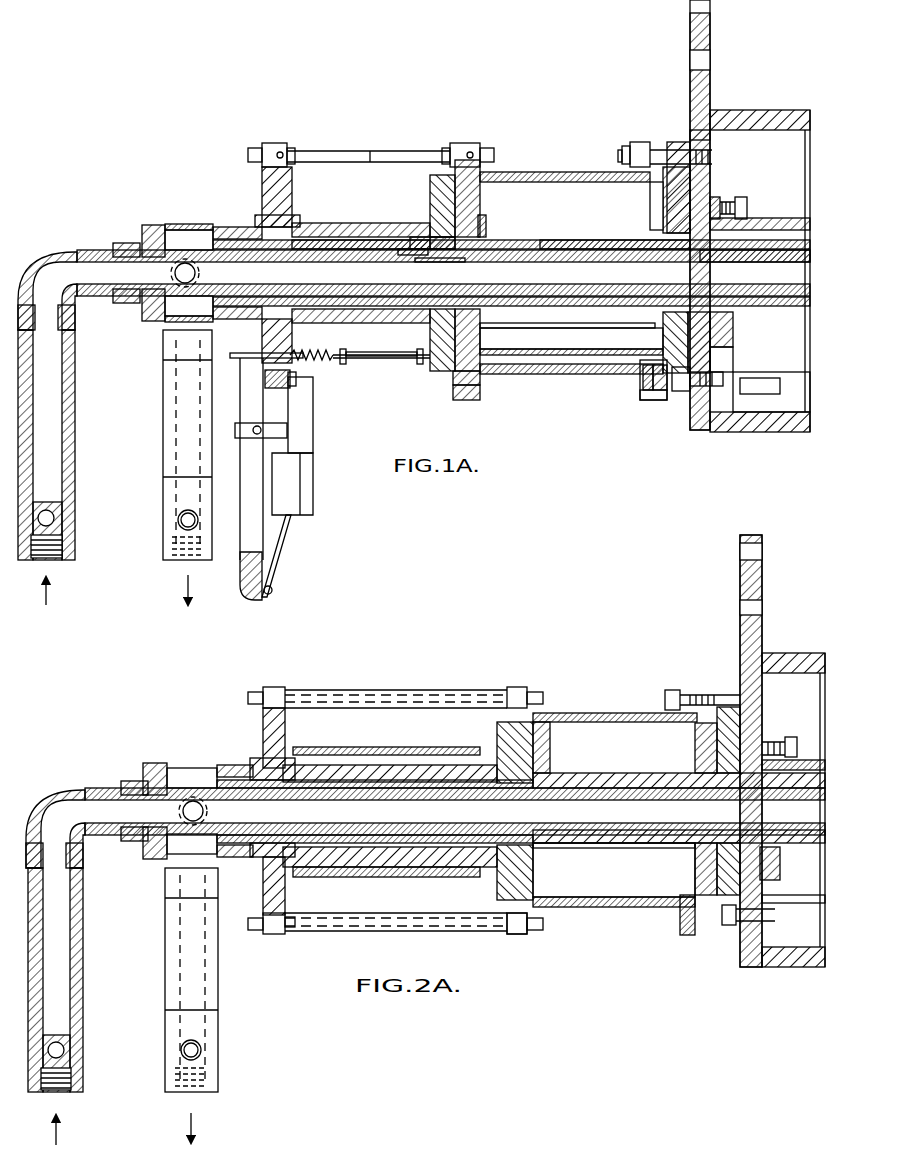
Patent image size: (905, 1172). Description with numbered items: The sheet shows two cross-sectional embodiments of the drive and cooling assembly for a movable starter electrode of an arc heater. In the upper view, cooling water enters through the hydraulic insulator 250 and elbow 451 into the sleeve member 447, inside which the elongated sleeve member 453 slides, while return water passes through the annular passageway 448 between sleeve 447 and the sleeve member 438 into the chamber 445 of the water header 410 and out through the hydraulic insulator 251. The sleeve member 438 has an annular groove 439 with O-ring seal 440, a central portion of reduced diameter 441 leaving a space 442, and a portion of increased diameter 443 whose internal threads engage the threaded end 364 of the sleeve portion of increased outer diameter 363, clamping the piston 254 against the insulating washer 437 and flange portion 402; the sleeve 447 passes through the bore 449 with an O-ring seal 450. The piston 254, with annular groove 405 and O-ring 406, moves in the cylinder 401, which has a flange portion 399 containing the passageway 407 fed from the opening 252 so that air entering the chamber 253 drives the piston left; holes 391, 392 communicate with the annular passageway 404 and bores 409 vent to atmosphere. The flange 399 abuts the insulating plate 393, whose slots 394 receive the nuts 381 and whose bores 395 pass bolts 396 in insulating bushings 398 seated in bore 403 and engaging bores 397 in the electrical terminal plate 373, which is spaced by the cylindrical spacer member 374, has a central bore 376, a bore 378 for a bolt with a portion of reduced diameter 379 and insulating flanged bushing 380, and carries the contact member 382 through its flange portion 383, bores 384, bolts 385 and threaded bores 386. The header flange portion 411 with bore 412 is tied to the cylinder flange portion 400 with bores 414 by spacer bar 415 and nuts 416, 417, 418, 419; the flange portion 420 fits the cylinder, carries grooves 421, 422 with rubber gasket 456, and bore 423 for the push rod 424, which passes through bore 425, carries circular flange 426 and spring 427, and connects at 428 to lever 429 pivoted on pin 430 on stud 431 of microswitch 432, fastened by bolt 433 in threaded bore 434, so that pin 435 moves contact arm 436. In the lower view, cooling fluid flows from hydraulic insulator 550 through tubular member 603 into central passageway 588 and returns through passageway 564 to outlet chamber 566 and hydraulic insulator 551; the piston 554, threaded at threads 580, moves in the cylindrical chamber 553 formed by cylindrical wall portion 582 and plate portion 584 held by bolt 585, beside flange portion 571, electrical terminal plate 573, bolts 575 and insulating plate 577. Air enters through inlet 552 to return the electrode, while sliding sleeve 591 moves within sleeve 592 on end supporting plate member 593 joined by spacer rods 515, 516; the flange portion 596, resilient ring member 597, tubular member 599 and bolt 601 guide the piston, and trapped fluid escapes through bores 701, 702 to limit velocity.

In FIG. 1A, the hydraulic insulator 250 is at (125, 410).
In FIG. 1A, the hydraulic insulator 251 is at (170, 466).
In FIG. 1A, the opening 252 is at (655, 398).
In FIG. 1A, the chamber 253 is at (631, 335).
In FIG. 1A, the piston 254 is at (482, 335).
In FIG. 1A, the portion of increased outer diameter 363 is at (620, 252).
In FIG. 1A, the threaded end 364 is at (420, 262).
In FIG. 1A, the electrical terminal plate 373 is at (712, 22).
In FIG. 1A, the cylindrical spacer member 374 is at (770, 112).
In FIG. 1A, the central bore 376 is at (745, 255).
In FIG. 1A, the bore 378 is at (720, 360).
In FIG. 1A, the portion of reduced diameter 379 is at (790, 378).
In FIG. 1A, the insulating flanged bushing 380 is at (724, 380).
In FIG. 1A, the nut 381 is at (684, 392).
In FIG. 1A, the contact member 382 is at (735, 340).
In FIG. 1A, the flange portion 383 is at (718, 205).
In FIG. 1A, the bores 384 is at (748, 195).
In FIG. 1A, the bolts 385 is at (748, 208).
In FIG. 1A, the threaded bores 386 is at (722, 196).
In FIG. 1A, the hole 391 is at (663, 218).
In FIG. 1A, the hole 392 is at (680, 320).
In FIG. 1A, the insulating plate 393 is at (675, 145).
In FIG. 1A, the slots 394 is at (668, 394).
In FIG. 1A, the bores 395 is at (648, 150).
In FIG. 1A, the bolts 396 is at (618, 158).
In FIG. 1A, the bores 397 is at (714, 155).
In FIG. 1A, the insulating flanged bushing 398 is at (626, 148).
In FIG. 1A, the flange portion 399 is at (643, 385).
In FIG. 1A, the flange portion 400 is at (462, 150).
In FIG. 1A, the cylinder 401 is at (541, 163).
In FIG. 1A, the flange portion 402 is at (545, 235).
In FIG. 1A, the bore 403 is at (650, 190).
In FIG. 1A, the annular passageway 404 is at (695, 318).
In FIG. 1A, the annular groove 405 is at (480, 370).
In FIG. 1A, the O-ring 406 is at (486, 388).
In FIG. 1A, the passageway 407 is at (650, 364).
In FIG. 1A, the bores 409 is at (702, 130).
In FIG. 1A, the water header 410 is at (266, 185).
In FIG. 1A, the flange portion 411 is at (275, 150).
In FIG. 1A, the bore 412 is at (281, 150).
In FIG. 1A, the bores 414 is at (472, 150).
In FIG. 1A, the spacer bar 415 is at (372, 150).
In FIG. 1A, the nut 416 is at (294, 156).
In FIG. 1A, the nut 417 is at (444, 155).
In FIG. 1A, the nut 418 is at (250, 152).
In FIG. 1A, the nut 419 is at (490, 152).
In FIG. 1A, the flange portion 420 is at (435, 200).
In FIG. 1A, the annular groove 421 is at (482, 203).
In FIG. 1A, the annular groove 422 is at (432, 182).
In FIG. 1A, the circular bore 423 is at (424, 368).
In FIG. 1A, the push rod 424 is at (370, 355).
In FIG. 1A, the bore 425 is at (285, 330).
In FIG. 1A, the circular flange 426 is at (322, 362).
In FIG. 1A, the spring 427 is at (323, 378).
In FIG. 1A, the connection 428 is at (234, 353).
In FIG. 1A, the lever 429 is at (225, 380).
In FIG. 1A, the pin 430 is at (235, 428).
In FIG. 1A, the stud 431 is at (245, 434).
In FIG. 1A, the microswitch 432 is at (365, 487).
In FIG. 1A, the bolt 433 is at (315, 395).
In FIG. 1A, the threaded bore 434 is at (300, 418).
In FIG. 1A, the pin 435 is at (278, 590).
In FIG. 1A, the contact arm 436 is at (290, 558).
In FIG. 1A, the insulating washer 437 is at (488, 325).
In FIG. 1A, the sleeve member 438 is at (292, 228).
In FIG. 1A, the annular groove 439 is at (187, 232).
In FIG. 1A, the O-ring seal 440 is at (228, 236).
In FIG. 1A, the central portion of reduced diameter 441 is at (402, 256).
In FIG. 1A, the space 442 is at (342, 238).
In FIG. 1A, the portion of increased diameter 443 is at (432, 236).
In FIG. 1A, the chamber 445 is at (152, 226).
In FIG. 1A, the sleeve member 447 is at (322, 254).
In FIG. 1A, the annular passageway 448 is at (378, 340).
In FIG. 1A, the bore 449 is at (125, 244).
In FIG. 1A, the O-ring seal 450 is at (124, 304).
In FIG. 1A, the elbow 451 is at (43, 256).
In FIG. 1A, the elongated sleeve member 453 is at (383, 252).
In FIG. 1A, the rubber gasket 456 is at (488, 224).
In FIG. 2A, the spacer rod 515 is at (400, 688).
In FIG. 2A, the spacer rod 516 is at (435, 932).
In FIG. 2A, the hydraulic insulator 550 is at (75, 978).
In FIG. 2A, the hydraulic insulator 551 is at (218, 996).
In FIG. 2A, the inlet 552 is at (690, 905).
In FIG. 2A, the cylindrical chamber 553 is at (649, 873).
In FIG. 2A, the piston 554 is at (533, 752).
In FIG. 2A, the cylindrical passageway 564 is at (448, 830).
In FIG. 2A, the outlet chamber 566 is at (192, 770).
In FIG. 2A, the flange portion 571 is at (762, 740).
In FIG. 2A, the electrical terminal plate 573 is at (738, 580).
In FIG. 2A, the bolts 575 is at (798, 745).
In FIG. 2A, the insulating plate 577 is at (725, 705).
In FIG. 2A, the threads 580 is at (518, 862).
In FIG. 2A, the cylindrical wall portion 582 is at (590, 713).
In FIG. 2A, the plate portion 584 is at (696, 750).
In FIG. 2A, the bolt 585 is at (668, 695).
In FIG. 2A, the central passageway 588 is at (637, 819).
In FIG. 2A, the sliding sleeve 591 is at (332, 868).
In FIG. 2A, the sleeve 592 is at (380, 875).
In FIG. 2A, the end supporting plate member 593 is at (272, 688).
In FIG. 2A, the flange portion 596 is at (480, 872).
In FIG. 2A, the annular resilient ring member 597 is at (518, 880).
In FIG. 2A, the tubular member 599 is at (355, 918).
In FIG. 2A, the bolt 601 is at (490, 920).
In FIG. 2A, the tubular member 603 is at (385, 800).
In FIG. 2A, the bore 701 is at (288, 752).
In FIG. 2A, the bore 702 is at (262, 860).